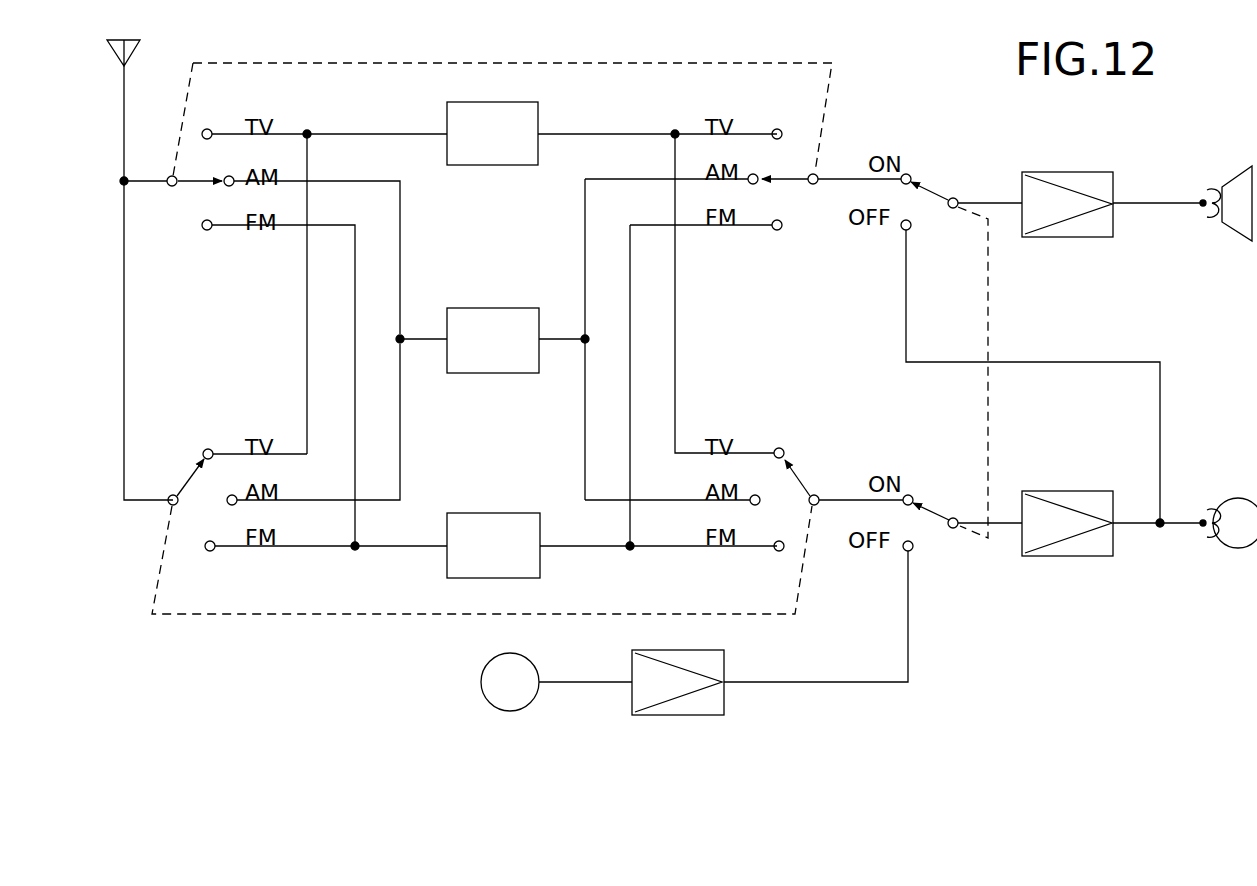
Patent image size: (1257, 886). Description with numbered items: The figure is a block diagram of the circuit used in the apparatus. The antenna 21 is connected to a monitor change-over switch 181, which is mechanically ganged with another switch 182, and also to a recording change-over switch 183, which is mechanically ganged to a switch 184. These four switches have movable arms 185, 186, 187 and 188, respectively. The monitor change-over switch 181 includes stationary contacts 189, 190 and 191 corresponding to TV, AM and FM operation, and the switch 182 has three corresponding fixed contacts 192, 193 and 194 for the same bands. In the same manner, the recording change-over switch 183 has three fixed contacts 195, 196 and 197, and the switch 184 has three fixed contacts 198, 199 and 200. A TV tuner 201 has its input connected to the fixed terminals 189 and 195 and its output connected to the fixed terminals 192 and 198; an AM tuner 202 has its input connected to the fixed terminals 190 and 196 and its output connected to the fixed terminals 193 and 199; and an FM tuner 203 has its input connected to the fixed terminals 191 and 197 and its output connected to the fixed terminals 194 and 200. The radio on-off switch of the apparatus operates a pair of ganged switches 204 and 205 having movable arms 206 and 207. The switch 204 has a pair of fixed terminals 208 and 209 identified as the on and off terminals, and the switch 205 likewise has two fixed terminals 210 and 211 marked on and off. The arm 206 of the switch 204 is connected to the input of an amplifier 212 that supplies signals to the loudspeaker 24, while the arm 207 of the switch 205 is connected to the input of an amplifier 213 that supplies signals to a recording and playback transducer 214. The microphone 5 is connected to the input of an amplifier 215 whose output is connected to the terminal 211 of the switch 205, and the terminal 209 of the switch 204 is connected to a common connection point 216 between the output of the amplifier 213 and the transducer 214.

The antenna 21 is at (131, 48).
The monitor change-over switch 181 is at (186, 160).
The switch 182 is at (808, 158).
The recording change-over switch 183 is at (182, 476).
The switch 184 is at (805, 470).
The movable arm 185 is at (188, 183).
The movable arm 186 is at (796, 182).
The movable arm 187 is at (186, 492).
The movable arm 188 is at (826, 491).
The stationary contact 189 is at (208, 129).
The stationary contact 190 is at (225, 177).
The stationary contact 191 is at (203, 231).
The fixed contact 192 is at (788, 120).
The fixed contact 193 is at (764, 165).
The fixed contact 194 is at (781, 231).
The fixed contact 195 is at (206, 449).
The fixed contact 196 is at (229, 495).
The fixed contact 197 is at (207, 553).
The fixed contact 198 is at (790, 436).
The fixed contact 199 is at (759, 494).
The fixed contact 200 is at (783, 551).
The TV tuner 201 is at (522, 108).
The AM tuner 202 is at (522, 314).
The FM tuner 203 is at (522, 519).
The switch 204 is at (931, 209).
The switch 205 is at (931, 530).
The movable arm 206 is at (945, 198).
The movable arm 207 is at (942, 518).
The fixed terminal 208 is at (910, 174).
The fixed terminal 209 is at (903, 231).
The fixed terminal 210 is at (912, 494).
The fixed terminal 211 is at (905, 552).
The amplifier 212 is at (1095, 178).
The amplifier 213 is at (1092, 497).
The recording and playback transducer 214 is at (1232, 499).
The amplifier 215 is at (704, 662).
The common connection point 216 is at (1162, 527).
The loudspeaker 24 is at (1238, 185).
The microphone 5 is at (527, 660).